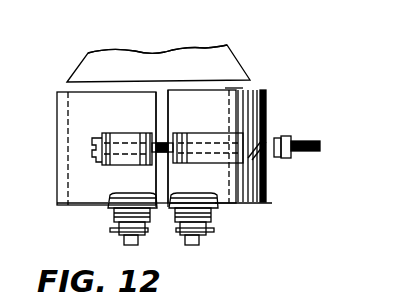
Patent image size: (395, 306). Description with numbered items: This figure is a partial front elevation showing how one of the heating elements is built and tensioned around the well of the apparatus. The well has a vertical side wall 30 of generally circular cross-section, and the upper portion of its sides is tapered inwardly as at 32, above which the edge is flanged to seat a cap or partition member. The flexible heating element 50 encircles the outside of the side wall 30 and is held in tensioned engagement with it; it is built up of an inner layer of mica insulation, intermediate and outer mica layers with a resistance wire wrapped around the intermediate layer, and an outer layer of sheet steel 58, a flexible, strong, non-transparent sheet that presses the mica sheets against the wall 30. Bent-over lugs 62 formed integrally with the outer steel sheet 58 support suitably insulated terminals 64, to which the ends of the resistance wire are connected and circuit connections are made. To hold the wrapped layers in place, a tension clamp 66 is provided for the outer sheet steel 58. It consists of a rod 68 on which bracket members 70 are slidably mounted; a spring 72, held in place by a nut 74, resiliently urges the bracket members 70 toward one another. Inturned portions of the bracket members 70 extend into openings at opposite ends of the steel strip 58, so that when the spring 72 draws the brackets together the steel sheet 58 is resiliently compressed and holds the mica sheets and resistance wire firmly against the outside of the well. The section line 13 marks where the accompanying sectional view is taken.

The section line 13- 13 is at (372, 128).
The side wall 30 is at (248, 80).
The tapered portion 32 is at (235, 53).
The flexible heating element 50 is at (276, 203).
The outer layer of sheet steel 58 is at (263, 97).
The bent-over lugs 62 is at (110, 200).
The terminals 64 is at (123, 242).
The tension clamp 66 is at (96, 171).
The rod 68 is at (320, 147).
The bracket members 70 is at (123, 133).
The spring 72 is at (256, 150).
The nut 74 is at (281, 158).